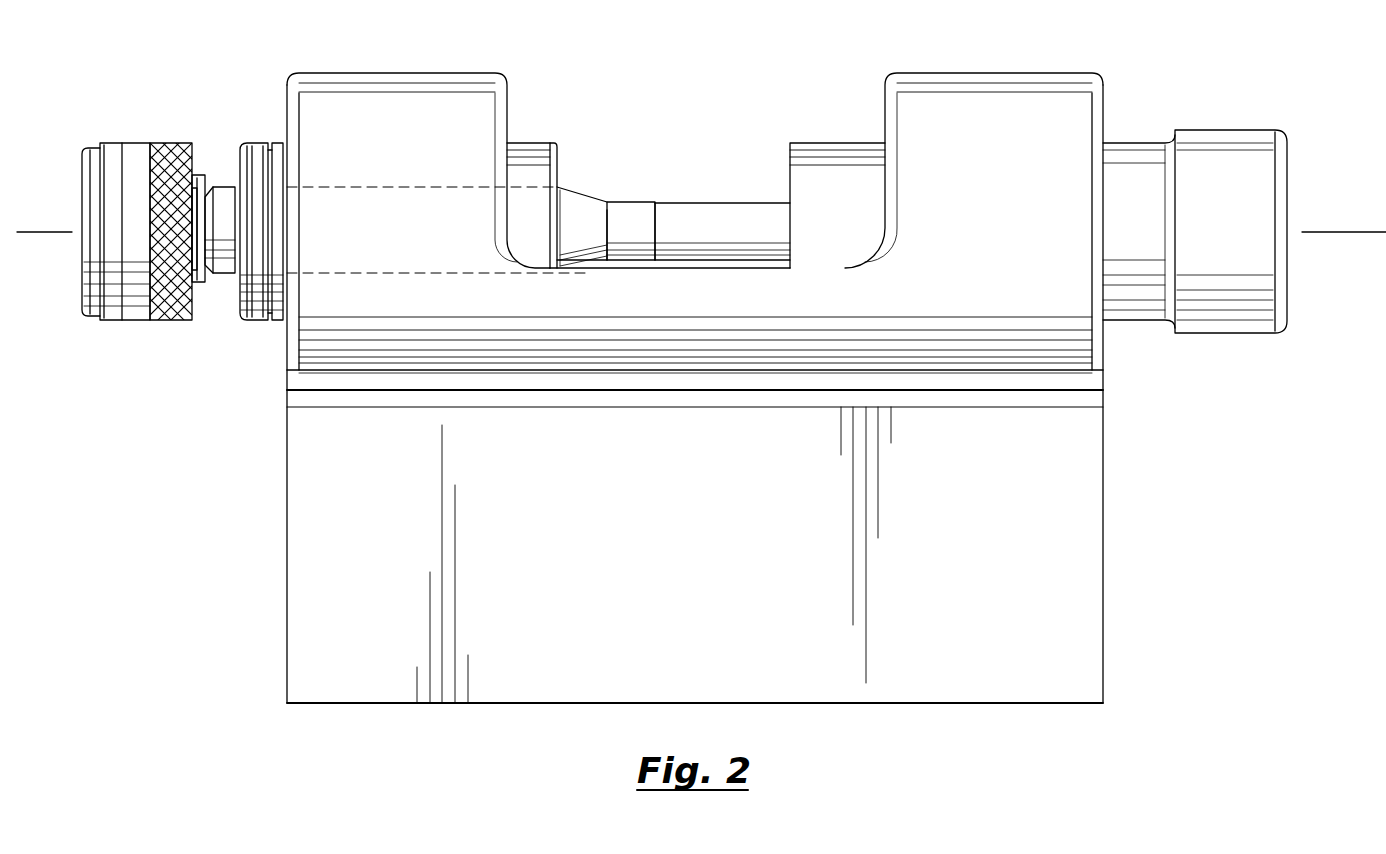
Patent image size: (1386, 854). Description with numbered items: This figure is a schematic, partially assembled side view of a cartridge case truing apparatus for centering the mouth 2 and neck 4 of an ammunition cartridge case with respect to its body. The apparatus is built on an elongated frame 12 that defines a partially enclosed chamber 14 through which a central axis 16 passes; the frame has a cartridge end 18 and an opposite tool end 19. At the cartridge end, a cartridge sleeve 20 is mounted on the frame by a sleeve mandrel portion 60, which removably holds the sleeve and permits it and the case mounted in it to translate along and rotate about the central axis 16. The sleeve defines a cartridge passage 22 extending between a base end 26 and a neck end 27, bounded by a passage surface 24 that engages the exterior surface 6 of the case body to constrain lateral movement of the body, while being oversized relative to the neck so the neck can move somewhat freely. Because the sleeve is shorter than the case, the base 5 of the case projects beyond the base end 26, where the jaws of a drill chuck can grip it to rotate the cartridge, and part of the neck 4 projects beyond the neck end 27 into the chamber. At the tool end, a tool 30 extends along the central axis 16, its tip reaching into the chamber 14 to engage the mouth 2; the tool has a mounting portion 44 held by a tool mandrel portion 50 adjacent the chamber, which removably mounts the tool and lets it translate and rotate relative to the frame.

The mouth 2 is at (655, 232).
The neck 4 is at (630, 215).
The base 5 is at (226, 196).
The exterior surface 6 is at (565, 195).
The frame 12 is at (987, 325).
The chamber 14 is at (727, 186).
The central axis 16 is at (1337, 232).
The cartridge end 18 is at (243, 369).
The tool end 19 is at (1147, 370).
The cartridge sleeve 20 is at (530, 160).
The cartridge passage 22 is at (333, 190).
The passage surface 24 is at (435, 190).
The base end 26 is at (248, 313).
The neck end 27 is at (553, 145).
The tool 30 is at (1203, 160).
The mounting portion 44 is at (830, 155).
The tool mandrel portion 50 is at (970, 118).
The sleeve mandrel portion 60 is at (403, 105).